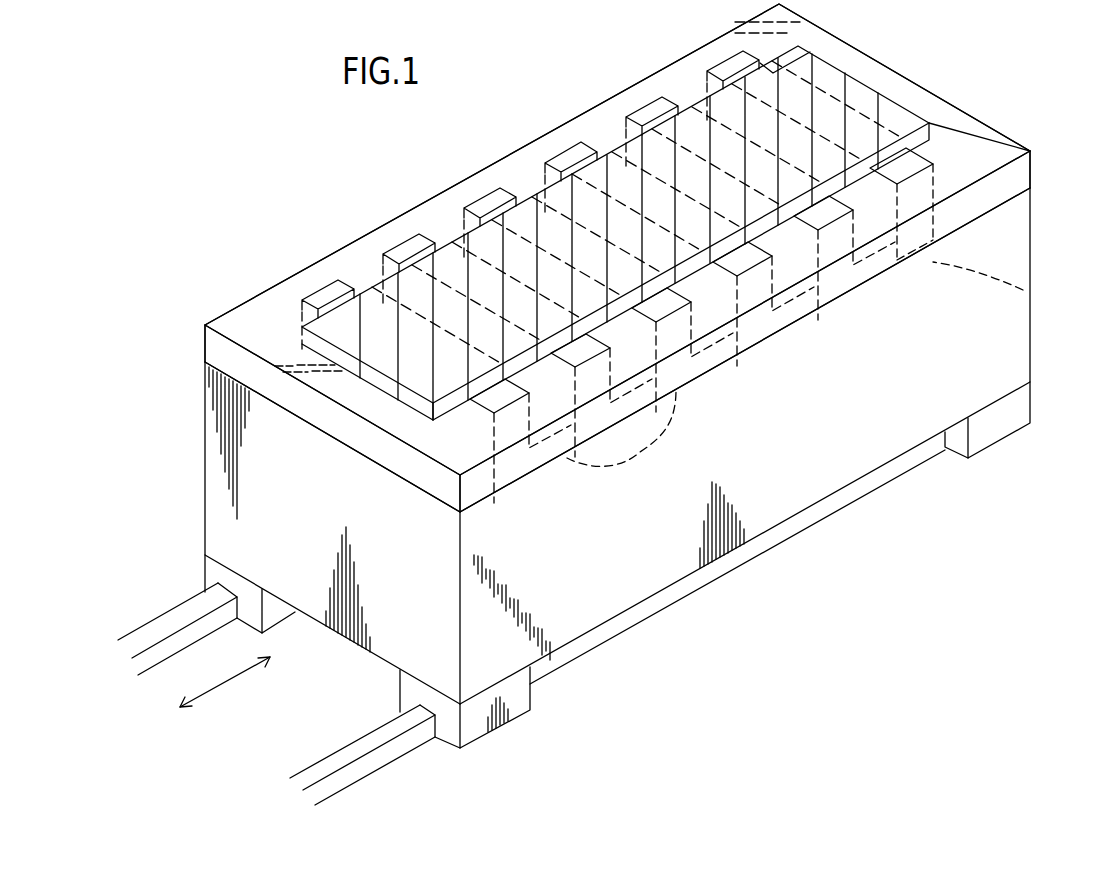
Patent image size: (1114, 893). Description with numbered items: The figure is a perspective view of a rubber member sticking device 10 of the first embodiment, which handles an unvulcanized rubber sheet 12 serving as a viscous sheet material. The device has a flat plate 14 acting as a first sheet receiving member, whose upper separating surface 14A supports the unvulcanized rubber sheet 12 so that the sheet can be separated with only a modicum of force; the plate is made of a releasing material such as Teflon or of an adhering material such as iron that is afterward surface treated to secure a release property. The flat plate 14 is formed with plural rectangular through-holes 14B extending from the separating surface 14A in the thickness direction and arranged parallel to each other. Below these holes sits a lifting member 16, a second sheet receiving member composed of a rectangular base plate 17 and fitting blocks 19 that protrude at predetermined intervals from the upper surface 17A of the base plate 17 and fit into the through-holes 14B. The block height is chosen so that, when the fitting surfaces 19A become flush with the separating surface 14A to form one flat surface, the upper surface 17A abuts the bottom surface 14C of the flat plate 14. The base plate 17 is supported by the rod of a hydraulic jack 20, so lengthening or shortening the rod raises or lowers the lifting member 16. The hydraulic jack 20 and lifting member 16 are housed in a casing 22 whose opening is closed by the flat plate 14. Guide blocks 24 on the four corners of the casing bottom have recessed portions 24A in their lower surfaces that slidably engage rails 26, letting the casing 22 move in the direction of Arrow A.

The rubber member sticking device 10 is at (229, 150).
The unvulcanized rubber sheet 12 is at (497, 225).
The flat plate 14 is at (1013, 178).
The separating surface 14A is at (913, 170).
The rectangular through-holes 14B is at (952, 168).
The bottom surface 14C is at (1023, 290).
The lifting member 16 is at (927, 262).
The rectangular base plate 17 is at (792, 218).
The upper surface 17A is at (763, 305).
The fitting blocks 19 is at (912, 170).
The fitting surfaces 19A is at (818, 232).
The hydraulic jack 20 is at (655, 440).
The casing 22 is at (568, 582).
The guide blocks 24 is at (530, 702).
The recessed portions 24A is at (433, 717).
The rails 26 is at (403, 748).
The Arrow A is at (245, 678).